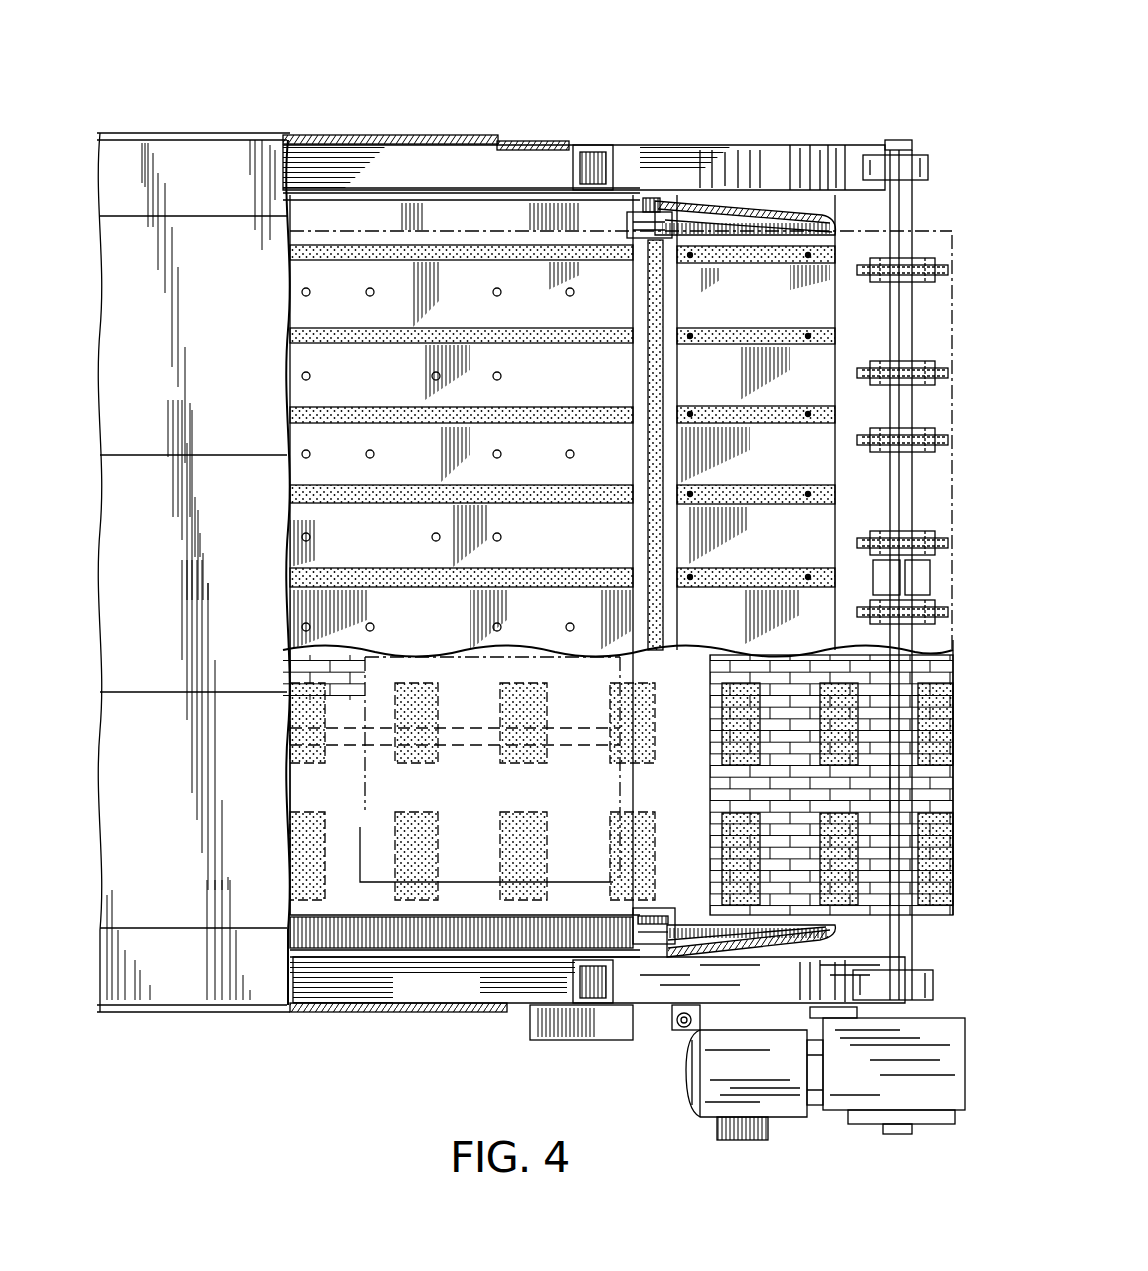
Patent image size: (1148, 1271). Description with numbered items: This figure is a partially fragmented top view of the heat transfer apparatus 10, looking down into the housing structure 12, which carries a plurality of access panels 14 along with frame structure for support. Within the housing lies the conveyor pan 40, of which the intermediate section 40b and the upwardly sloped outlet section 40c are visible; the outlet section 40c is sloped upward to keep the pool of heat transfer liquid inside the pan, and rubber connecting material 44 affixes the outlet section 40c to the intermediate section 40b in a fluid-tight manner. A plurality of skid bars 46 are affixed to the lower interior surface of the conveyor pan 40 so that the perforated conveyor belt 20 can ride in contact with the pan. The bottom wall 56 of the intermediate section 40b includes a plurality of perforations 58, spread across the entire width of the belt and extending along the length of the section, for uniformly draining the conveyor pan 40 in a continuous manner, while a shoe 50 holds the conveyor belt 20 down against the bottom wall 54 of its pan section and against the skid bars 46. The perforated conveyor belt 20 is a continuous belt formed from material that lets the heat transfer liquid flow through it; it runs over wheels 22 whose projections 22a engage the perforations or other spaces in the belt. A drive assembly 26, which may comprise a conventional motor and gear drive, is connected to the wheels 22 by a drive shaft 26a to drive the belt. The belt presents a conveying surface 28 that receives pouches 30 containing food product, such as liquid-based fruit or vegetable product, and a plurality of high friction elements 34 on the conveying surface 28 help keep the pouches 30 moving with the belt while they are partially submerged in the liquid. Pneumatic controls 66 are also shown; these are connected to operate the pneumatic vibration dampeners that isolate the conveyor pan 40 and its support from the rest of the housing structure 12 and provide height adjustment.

The apparatus 10 is at (832, 50).
The housing structure 12 is at (590, 142).
The access panels 14 is at (205, 132).
The perforated conveyor belt 20 is at (614, 777).
The wheels 22 is at (858, 570).
The projections 22a is at (862, 270).
The drive assembly 26 is at (797, 1120).
The drive shaft 26a is at (895, 398).
The conveying surface 28 is at (468, 805).
The pouches 30 is at (365, 813).
The high friction elements 34 is at (545, 765).
The conveyor pan 40 is at (442, 185).
The intermediate section 40b is at (363, 225).
The outlet section 40c is at (742, 202).
The rubber connecting material 44 is at (655, 385).
The skid bars 46 is at (478, 262).
The shoe 50 is at (660, 270).
The bottom wall 54 is at (718, 632).
The bottom wall 56 is at (385, 557).
The perforations 58 is at (370, 296).
The pneumatic controls 66 is at (672, 1030).